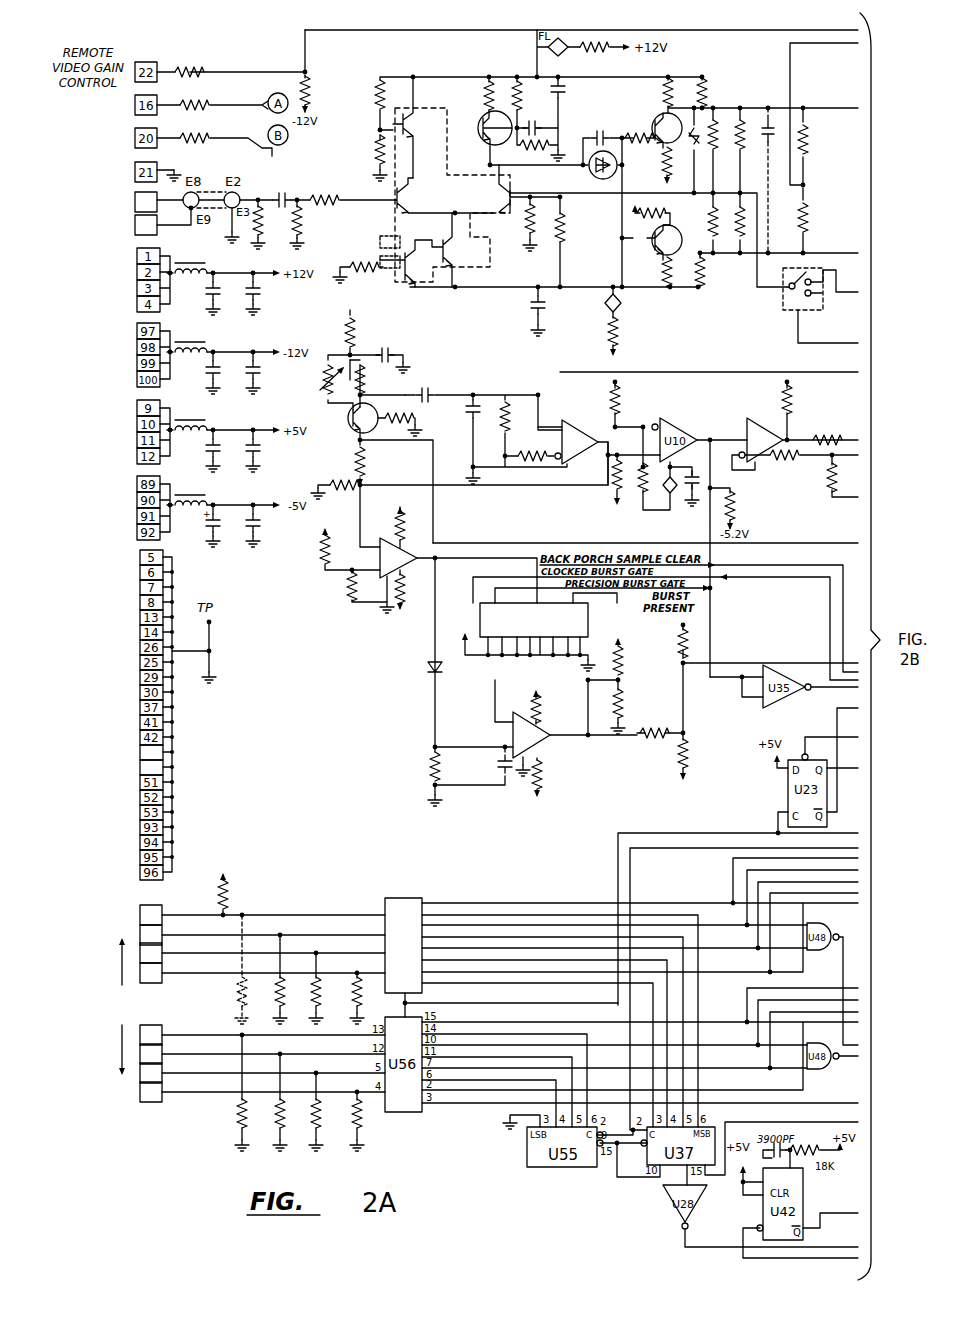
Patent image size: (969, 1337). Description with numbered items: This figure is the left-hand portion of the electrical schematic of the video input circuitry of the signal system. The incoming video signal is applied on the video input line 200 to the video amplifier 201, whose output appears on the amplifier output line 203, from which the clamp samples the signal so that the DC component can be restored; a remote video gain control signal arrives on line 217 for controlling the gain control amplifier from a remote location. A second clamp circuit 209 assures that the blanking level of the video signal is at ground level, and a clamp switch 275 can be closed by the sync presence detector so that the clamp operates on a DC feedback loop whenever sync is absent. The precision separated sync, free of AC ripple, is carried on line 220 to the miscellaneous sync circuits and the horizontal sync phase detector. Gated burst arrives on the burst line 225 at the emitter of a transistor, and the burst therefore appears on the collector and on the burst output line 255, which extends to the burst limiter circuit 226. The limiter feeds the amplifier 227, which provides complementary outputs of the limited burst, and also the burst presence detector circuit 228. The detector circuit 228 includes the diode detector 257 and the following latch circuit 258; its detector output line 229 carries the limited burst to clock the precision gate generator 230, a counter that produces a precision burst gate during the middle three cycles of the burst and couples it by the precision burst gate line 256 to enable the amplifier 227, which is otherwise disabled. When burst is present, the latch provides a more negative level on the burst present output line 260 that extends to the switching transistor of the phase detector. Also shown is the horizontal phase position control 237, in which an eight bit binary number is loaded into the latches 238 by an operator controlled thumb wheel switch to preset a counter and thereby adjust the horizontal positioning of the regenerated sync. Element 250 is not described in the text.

The remote video gain control signal line 217 is at (416, 30).
The video input line 200 is at (162, 193).
The video amplifier 201 is at (380, 209).
The amplifier output line 203 is at (779, 108).
The second clamp circuit 209 is at (572, 330).
The emitter follower transistor 250 is at (356, 433).
The burst output line 255 is at (462, 392).
The burst limiter circuit 226 is at (602, 414).
The burst line 225 is at (574, 540).
The amplifier 227 is at (782, 465).
The precision burst gate line 256 is at (716, 474).
The clamp switch 275 is at (782, 303).
The precision separated sync line 220 is at (813, 343).
The burst presence detector circuit 228 is at (385, 677).
The detector output line 229 is at (462, 561).
The diode detector 257 is at (432, 663).
The precision gate generator 230 is at (537, 640).
The latch circuit 258 is at (545, 743).
The burst present output line 260 is at (743, 663).
The horizontal phase position control 237 is at (367, 893).
The latches 238 is at (418, 893).